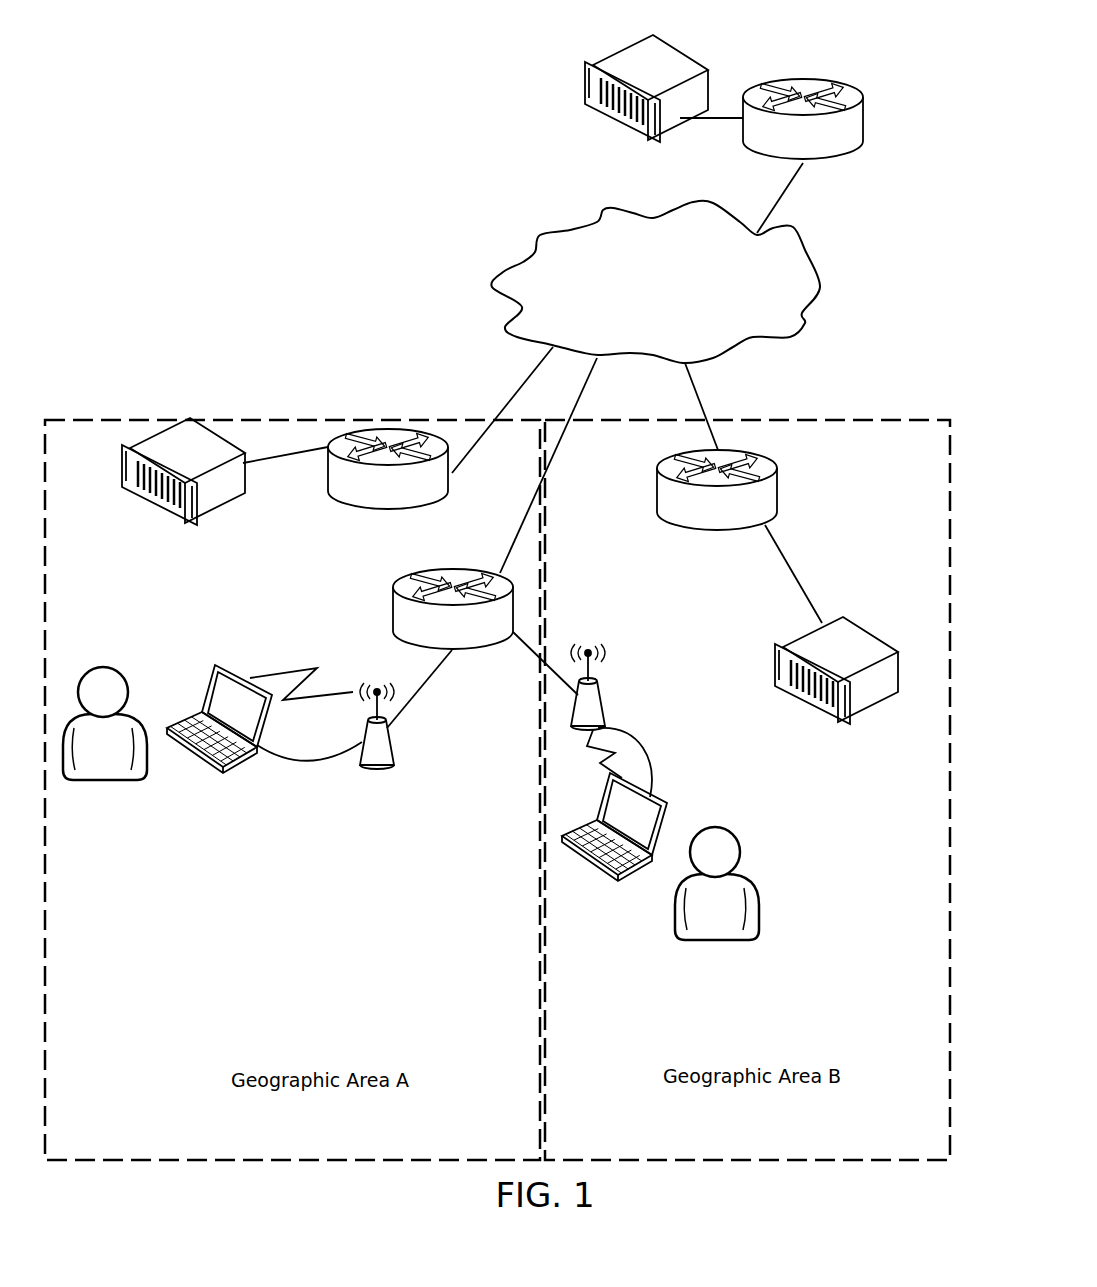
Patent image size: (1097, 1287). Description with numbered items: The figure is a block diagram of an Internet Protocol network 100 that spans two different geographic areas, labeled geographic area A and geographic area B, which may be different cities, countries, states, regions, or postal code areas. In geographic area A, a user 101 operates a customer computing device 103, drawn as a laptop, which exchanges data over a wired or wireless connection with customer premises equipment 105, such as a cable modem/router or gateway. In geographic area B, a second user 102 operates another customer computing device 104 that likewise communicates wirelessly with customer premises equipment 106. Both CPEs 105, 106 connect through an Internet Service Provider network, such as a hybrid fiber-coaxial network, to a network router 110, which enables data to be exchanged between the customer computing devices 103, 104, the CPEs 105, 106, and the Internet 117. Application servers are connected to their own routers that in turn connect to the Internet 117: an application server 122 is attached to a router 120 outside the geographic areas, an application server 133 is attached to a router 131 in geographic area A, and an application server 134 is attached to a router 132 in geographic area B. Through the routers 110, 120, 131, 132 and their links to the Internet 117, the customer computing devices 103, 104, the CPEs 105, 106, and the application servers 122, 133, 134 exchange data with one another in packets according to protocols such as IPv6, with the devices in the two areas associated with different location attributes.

The IP network 100 is at (206, 145).
The user in geographic area A 101 is at (105, 723).
The user in geographic area B 102 is at (717, 883).
The customer computing device 103 is at (223, 770).
The customer computing device 104 is at (614, 875).
The customer premises equipment 105 is at (378, 770).
The customer premises equipment 106 is at (600, 695).
The network router 110 is at (515, 587).
The Internet 117 is at (655, 282).
The router 120 is at (865, 100).
The application server 122 is at (672, 45).
The router 131 is at (363, 507).
The router 132 is at (778, 498).
The application server 133 is at (207, 505).
The application server 134 is at (840, 710).